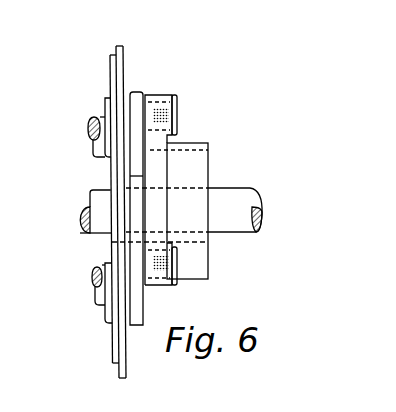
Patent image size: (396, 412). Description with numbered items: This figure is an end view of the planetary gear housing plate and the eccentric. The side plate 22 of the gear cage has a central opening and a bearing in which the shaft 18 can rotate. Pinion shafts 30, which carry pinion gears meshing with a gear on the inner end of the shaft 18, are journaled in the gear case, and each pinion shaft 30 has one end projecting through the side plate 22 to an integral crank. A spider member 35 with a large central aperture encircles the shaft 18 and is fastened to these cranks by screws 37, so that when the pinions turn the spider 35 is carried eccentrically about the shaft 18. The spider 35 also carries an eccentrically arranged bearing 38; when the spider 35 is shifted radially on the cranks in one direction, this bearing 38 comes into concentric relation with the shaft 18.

The shaft 18 is at (249, 189).
The side plate 22 is at (122, 66).
The pinion shafts 30 is at (93, 143).
The spider member 35 is at (162, 96).
The screws 37 is at (177, 105).
The eccentrically arranged bearing 38 is at (203, 143).